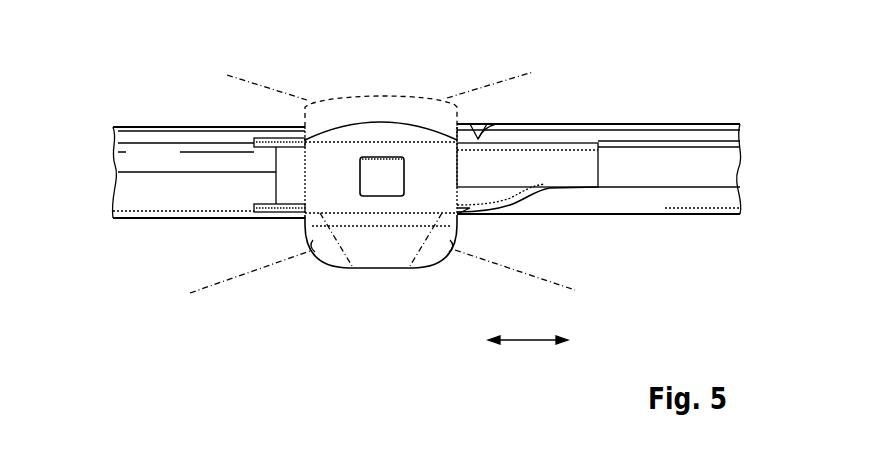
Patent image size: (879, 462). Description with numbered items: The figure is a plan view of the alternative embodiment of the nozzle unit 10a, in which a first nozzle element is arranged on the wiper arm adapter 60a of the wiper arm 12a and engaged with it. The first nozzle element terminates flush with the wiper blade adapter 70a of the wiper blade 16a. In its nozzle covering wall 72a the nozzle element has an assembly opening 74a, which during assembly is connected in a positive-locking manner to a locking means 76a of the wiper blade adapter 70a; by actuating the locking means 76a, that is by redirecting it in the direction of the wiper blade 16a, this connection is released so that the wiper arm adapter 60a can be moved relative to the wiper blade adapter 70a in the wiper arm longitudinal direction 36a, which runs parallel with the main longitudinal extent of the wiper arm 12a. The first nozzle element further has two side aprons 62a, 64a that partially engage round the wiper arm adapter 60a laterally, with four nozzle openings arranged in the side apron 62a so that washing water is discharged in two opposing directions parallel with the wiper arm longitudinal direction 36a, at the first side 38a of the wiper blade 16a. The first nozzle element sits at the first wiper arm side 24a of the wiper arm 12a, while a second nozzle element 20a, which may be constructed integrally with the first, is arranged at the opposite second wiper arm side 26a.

The nozzle unit 10a is at (325, 310).
The wiper arm 12a is at (655, 165).
The wiper blade 16a is at (158, 158).
The second nozzle element 20a is at (375, 98).
The first wiper arm side 24a is at (463, 230).
The second wiper arm side 26a is at (483, 140).
The wiper arm longitudinal direction 36a is at (528, 343).
The first side of the wiper blade 38a is at (190, 262).
The wiper arm adapter 60a is at (578, 141).
The side apron 62a is at (402, 252).
The side apron 64a is at (530, 124).
The wiper blade adapter 70a is at (256, 106).
The nozzle covering wall 72a is at (414, 148).
The assembly opening 74a is at (385, 182).
The locking means 76a is at (372, 167).